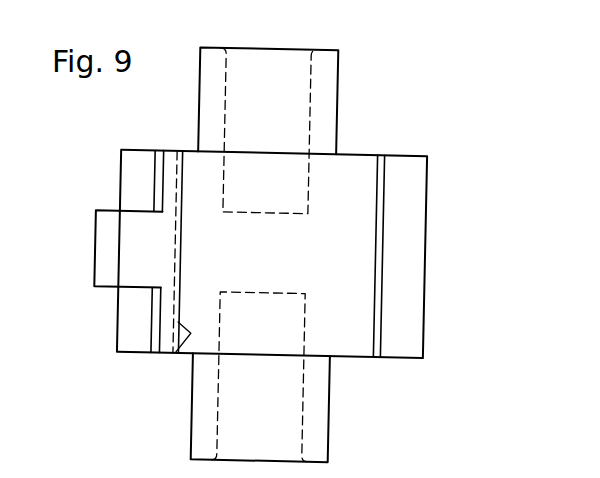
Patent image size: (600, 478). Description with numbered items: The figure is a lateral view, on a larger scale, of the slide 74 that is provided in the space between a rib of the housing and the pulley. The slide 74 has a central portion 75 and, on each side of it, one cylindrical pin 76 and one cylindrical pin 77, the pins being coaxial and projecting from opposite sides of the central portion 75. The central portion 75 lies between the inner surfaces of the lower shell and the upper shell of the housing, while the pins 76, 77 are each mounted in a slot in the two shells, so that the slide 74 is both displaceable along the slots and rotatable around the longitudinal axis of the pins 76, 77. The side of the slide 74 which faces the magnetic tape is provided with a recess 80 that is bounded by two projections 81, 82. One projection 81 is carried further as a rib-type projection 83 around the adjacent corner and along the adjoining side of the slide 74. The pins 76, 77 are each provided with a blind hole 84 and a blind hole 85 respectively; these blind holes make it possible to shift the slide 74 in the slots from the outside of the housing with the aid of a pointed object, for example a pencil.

The slide 74 is at (366, 146).
The central portion 75 is at (427, 236).
The cylindrical pin 76 is at (337, 84).
The cylindrical pin 77 is at (330, 439).
The recess 80 is at (343, 253).
The projection 81 is at (191, 334).
The projection 82 is at (384, 199).
The rib-type projection 83 is at (95, 251).
The blind hole 84 is at (270, 87).
The blind hole 85 is at (282, 388).